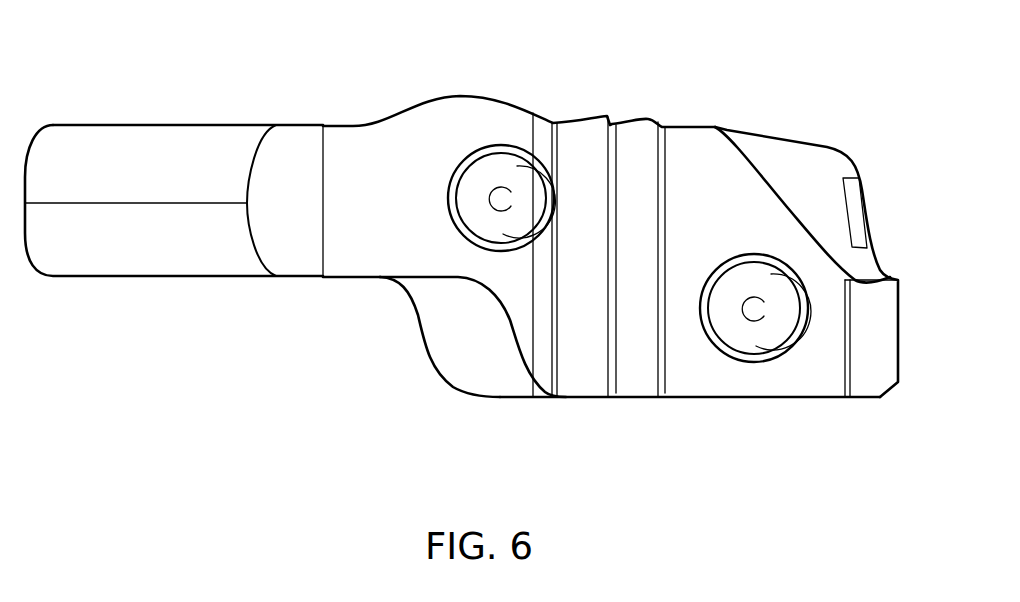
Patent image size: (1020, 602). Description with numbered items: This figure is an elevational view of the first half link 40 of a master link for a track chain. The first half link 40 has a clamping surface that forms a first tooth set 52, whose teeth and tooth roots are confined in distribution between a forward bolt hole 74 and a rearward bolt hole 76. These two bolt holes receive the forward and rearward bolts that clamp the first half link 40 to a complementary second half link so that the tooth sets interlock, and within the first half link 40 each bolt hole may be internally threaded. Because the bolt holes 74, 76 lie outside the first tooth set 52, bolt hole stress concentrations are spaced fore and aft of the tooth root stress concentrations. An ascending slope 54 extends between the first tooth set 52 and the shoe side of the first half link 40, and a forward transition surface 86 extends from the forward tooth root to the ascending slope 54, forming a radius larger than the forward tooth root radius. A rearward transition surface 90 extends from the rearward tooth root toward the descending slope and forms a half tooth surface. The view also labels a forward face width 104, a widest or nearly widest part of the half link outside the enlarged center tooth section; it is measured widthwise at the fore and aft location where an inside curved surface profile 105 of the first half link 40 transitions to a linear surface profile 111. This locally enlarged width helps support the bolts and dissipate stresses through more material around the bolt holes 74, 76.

The first half link 40 is at (832, 164).
The first tooth set 52 is at (630, 400).
The ascending slope 54 is at (526, 343).
The forward bolt hole 74 is at (478, 232).
The rearward bolt hole 76 is at (784, 338).
The forward transition surface 86 is at (543, 128).
The rearward transition surface 90 is at (693, 138).
The forward face width 104 is at (460, 276).
The inside curved surface profile 105 is at (474, 287).
The linear surface profile 111 is at (251, 279).